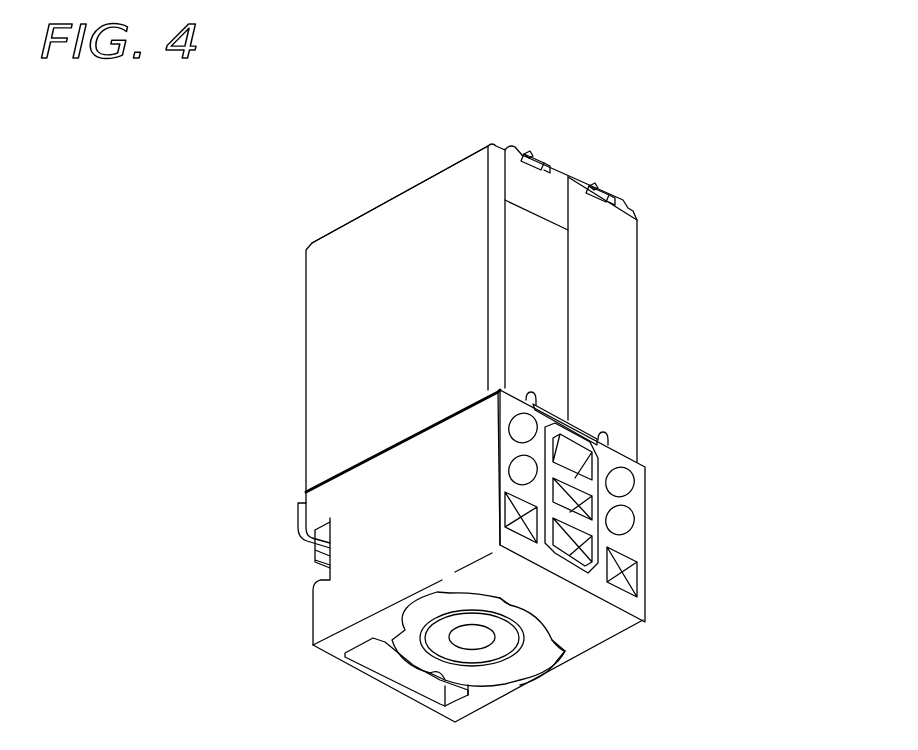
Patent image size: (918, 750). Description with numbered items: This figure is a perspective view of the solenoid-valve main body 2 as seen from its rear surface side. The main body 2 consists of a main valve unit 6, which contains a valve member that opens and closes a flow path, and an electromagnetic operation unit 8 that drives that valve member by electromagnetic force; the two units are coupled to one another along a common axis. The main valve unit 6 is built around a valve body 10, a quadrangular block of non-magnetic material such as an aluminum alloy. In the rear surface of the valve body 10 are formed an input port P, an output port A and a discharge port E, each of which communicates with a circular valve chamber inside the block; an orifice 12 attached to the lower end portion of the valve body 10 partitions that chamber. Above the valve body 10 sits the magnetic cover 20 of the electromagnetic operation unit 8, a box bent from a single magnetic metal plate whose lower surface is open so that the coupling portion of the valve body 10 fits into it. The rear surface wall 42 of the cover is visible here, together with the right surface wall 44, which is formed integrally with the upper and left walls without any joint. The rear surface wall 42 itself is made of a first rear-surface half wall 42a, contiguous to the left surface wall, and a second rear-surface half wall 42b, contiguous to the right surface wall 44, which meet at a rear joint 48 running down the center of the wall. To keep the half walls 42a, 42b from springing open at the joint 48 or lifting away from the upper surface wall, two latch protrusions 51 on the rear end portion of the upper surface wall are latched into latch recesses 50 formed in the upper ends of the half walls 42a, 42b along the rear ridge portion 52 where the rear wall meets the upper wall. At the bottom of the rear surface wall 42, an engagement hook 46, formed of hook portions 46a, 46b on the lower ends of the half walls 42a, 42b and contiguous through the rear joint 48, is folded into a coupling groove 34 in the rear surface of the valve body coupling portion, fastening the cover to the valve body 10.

The solenoid-valve main body 2 is at (276, 162).
The main valve unit 6 is at (290, 548).
The electromagnetic operation unit 8 is at (278, 290).
The valve body 10 is at (340, 607).
The orifice 12 is at (497, 647).
The magnetic cover 20 is at (370, 213).
The coupling groove 34 is at (610, 437).
The rear surface wall 42 is at (727, 178).
The first rear-surface half wall 42a is at (597, 223).
The second rear-surface half wall 42b is at (540, 253).
The right surface wall 44 is at (340, 372).
The engagement hook 46 is at (732, 335).
The hook portion 46a is at (580, 430).
The hook portion 46b is at (548, 412).
The rear joint 48 is at (572, 310).
The latch recess 50 is at (527, 156).
The latch protrusion 51 is at (542, 164).
The rear ridge portion 52 is at (504, 133).
The discharge port E is at (575, 462).
The output port A is at (570, 497).
The input port P is at (570, 540).